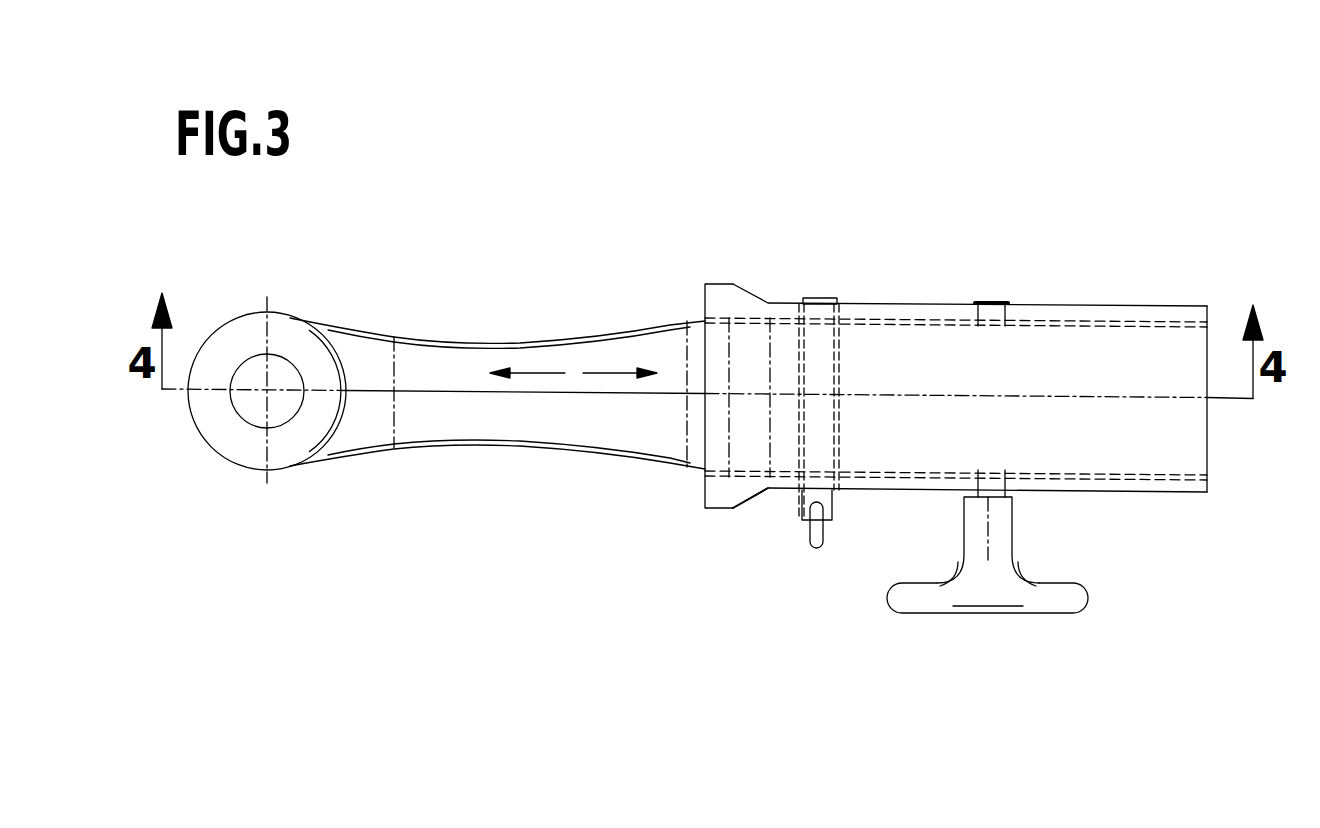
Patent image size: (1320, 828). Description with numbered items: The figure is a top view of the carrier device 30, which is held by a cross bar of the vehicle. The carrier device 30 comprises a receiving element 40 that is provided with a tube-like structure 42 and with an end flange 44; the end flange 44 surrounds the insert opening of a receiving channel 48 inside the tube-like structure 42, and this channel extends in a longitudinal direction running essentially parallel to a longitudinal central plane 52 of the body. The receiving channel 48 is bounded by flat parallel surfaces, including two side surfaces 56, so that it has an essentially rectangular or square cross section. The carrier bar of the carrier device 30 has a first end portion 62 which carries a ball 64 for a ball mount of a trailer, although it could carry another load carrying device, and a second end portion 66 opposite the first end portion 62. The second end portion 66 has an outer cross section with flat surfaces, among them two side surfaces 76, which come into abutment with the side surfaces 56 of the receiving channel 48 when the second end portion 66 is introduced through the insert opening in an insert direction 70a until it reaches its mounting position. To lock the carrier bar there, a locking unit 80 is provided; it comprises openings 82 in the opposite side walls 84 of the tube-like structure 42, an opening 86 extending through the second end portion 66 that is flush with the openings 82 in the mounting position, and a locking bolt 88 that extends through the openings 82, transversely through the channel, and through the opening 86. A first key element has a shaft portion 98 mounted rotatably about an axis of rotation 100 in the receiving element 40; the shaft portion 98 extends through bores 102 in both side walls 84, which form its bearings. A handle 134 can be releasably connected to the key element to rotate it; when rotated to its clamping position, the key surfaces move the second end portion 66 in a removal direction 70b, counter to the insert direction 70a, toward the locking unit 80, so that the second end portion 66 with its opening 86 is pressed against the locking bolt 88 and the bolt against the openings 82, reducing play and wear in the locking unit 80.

The carrier device 30 is at (546, 238).
The receiving element 40 is at (877, 280).
The tube-like structure 42 is at (863, 490).
The end flange 44 is at (712, 300).
The receiving channel 48 is at (990, 332).
The longitudinal central plane 52 is at (555, 398).
The side surfaces 56 is at (1098, 330).
The first end portion 62 is at (335, 340).
The ball 64 is at (282, 442).
The second end portion 66 is at (930, 447).
The insert direction 70a is at (607, 350).
The removal direction 70b is at (532, 350).
The side surfaces 76 is at (860, 320).
The locking unit 80 is at (780, 503).
The openings 82 is at (807, 313).
The side walls 84 is at (1147, 306).
The opening 86 is at (840, 378).
The locking bolt 88 is at (803, 510).
The shaft portion 98 is at (985, 555).
The axis of rotation 100 is at (992, 540).
The bores 102 is at (997, 300).
The handle 134 is at (1062, 600).